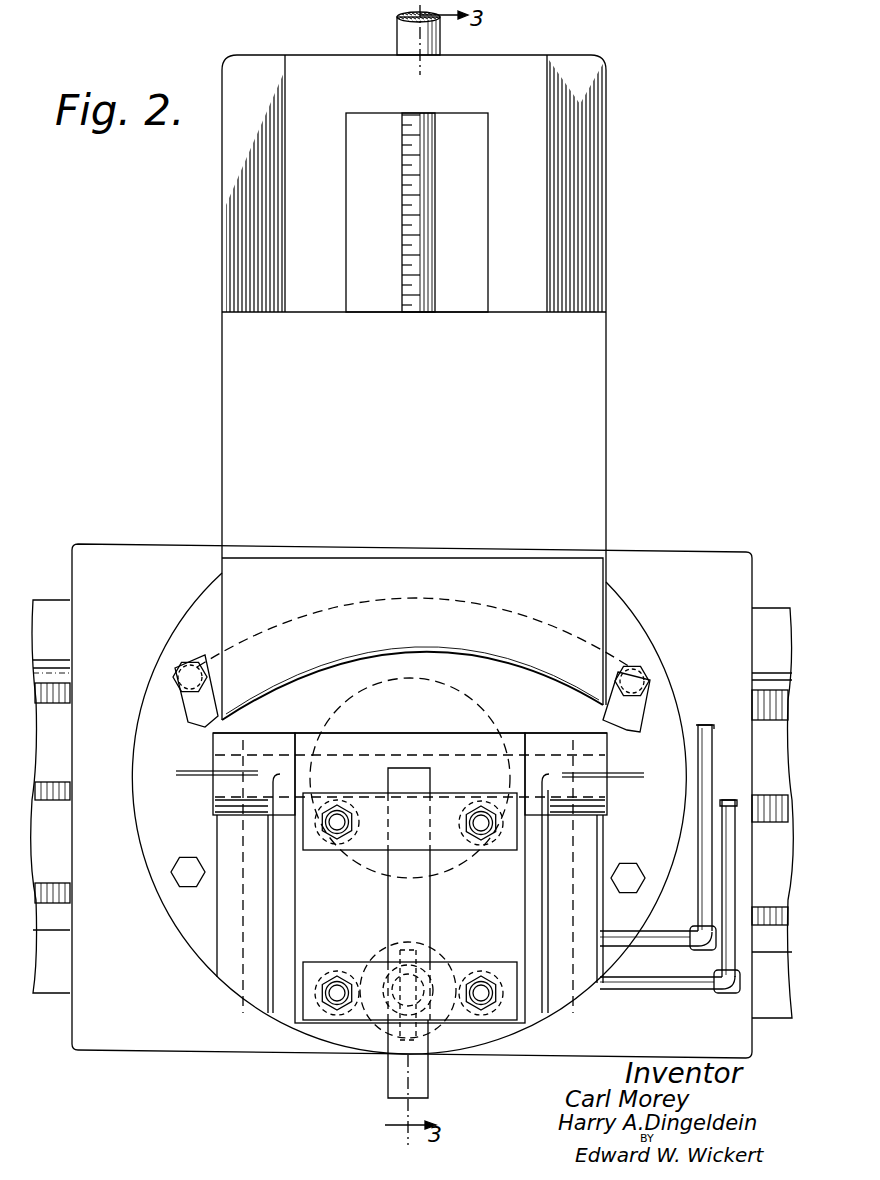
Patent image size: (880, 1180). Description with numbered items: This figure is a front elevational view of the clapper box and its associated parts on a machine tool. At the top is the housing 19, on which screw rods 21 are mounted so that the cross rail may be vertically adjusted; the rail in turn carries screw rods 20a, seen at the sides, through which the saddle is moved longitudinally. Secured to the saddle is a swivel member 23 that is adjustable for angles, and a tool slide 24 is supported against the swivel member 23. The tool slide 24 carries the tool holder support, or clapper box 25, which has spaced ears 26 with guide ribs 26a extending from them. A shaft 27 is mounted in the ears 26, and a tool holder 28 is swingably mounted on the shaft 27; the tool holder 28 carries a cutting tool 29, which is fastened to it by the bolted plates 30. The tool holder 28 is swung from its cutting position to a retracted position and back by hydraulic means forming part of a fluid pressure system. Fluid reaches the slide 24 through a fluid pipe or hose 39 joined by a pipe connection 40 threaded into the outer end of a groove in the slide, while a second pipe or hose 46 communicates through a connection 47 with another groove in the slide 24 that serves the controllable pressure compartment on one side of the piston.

The housing 19 is at (590, 222).
The screw rods 21 is at (435, 212).
The swivel member 23 is at (680, 570).
The tool slide 24 is at (570, 570).
The clapper box 25 is at (455, 670).
The spaced ears 26 is at (227, 770).
The guide ribs 26a is at (282, 977).
The shaft 27 is at (583, 797).
The tool holder 28 is at (307, 908).
The cutting tool 29 is at (392, 1072).
The bolted plates 30 is at (320, 838).
The fluid pipe or hose 39 is at (728, 868).
The pipe connection 40 is at (717, 990).
The pipe or hose 46 is at (707, 728).
The connection 47 is at (690, 930).
The screw rods 20a is at (768, 717).